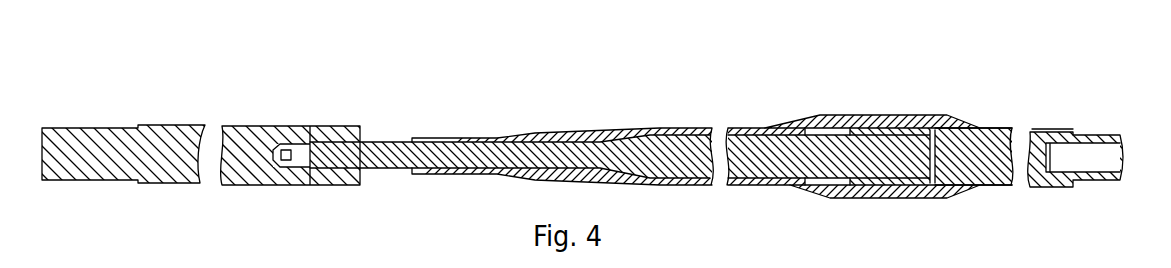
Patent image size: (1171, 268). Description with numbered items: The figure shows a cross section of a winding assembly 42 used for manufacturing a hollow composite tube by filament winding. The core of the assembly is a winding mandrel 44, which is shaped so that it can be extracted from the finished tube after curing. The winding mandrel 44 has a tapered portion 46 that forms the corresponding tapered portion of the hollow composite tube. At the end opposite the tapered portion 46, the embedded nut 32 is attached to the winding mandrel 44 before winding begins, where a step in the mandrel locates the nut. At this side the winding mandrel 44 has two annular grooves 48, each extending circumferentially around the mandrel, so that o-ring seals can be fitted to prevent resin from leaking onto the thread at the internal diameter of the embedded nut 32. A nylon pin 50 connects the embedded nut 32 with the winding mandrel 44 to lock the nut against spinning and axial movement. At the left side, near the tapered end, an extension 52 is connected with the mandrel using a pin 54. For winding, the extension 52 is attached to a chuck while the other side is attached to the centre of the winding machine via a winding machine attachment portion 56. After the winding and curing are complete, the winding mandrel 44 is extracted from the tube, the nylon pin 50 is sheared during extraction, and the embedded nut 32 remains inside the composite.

The winding assembly 42 is at (853, 41).
The extension 52 is at (172, 127).
The pin 54 is at (315, 137).
The winding mandrel 44 is at (673, 152).
The tapered portion 46 is at (641, 178).
The embedded nut 32 is at (835, 128).
The annular grooves 48 is at (793, 178).
The nylon pin 50 is at (935, 148).
The winding machine attachment portion 56 is at (1100, 142).